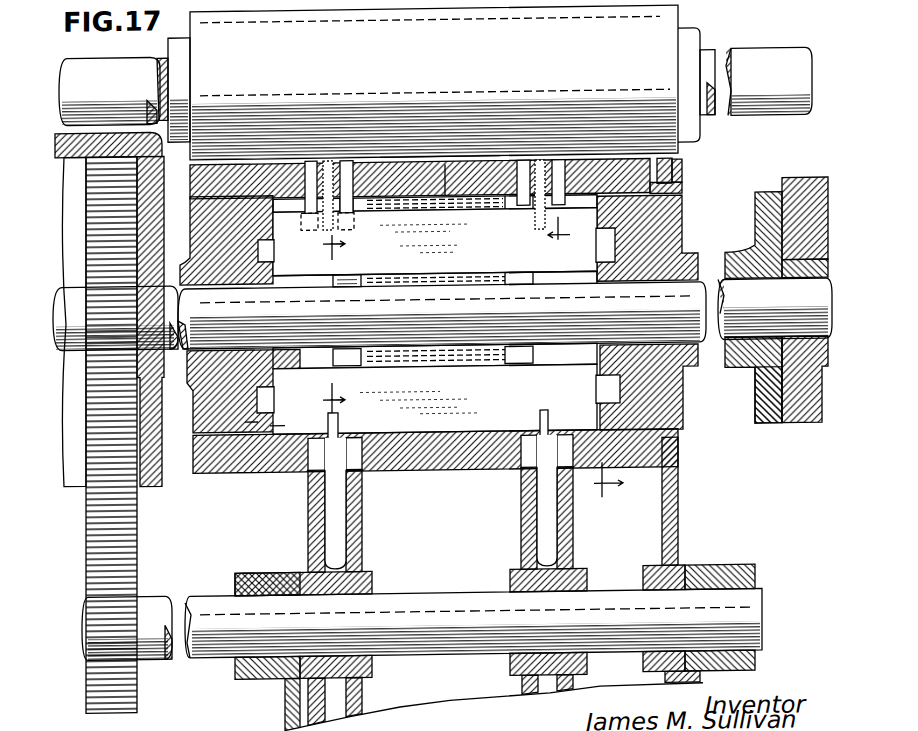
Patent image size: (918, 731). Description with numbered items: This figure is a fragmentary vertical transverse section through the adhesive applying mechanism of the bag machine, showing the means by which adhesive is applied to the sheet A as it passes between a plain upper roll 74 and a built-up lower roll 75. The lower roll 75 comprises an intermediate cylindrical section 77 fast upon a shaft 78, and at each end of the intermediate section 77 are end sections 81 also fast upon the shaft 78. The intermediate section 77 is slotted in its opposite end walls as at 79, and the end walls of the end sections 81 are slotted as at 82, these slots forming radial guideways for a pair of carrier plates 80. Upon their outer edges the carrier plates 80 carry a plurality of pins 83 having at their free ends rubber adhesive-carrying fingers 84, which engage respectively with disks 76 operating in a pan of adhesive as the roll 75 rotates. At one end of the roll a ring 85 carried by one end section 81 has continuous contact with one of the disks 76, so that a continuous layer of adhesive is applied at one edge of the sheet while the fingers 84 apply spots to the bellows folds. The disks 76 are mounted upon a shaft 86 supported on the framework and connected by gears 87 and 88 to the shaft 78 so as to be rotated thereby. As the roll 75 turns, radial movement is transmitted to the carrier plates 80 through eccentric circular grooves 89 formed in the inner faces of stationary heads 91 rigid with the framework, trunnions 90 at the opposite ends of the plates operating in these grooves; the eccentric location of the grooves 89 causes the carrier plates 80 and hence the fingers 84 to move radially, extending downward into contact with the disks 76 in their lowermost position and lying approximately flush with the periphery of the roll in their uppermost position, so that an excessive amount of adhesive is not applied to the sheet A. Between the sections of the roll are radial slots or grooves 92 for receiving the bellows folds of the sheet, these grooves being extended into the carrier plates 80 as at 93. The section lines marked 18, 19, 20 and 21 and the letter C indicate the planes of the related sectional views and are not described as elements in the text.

The plain upper roll 74 is at (441, 83).
The end sections 81 is at (245, 164).
The ring 85 is at (672, 179).
The built-up lower roll 75 is at (682, 191).
The rubber adhesive-carrying fingers 84 is at (350, 159).
The pins 83 is at (353, 186).
The sheet A is at (440, 160).
The carrier plates 80 is at (436, 241).
The intermediate cylindrical section 77 is at (450, 188).
The pin C is at (536, 215).
The section line 21 is at (559, 234).
The section line 20 is at (323, 324).
The slots 82 is at (293, 280).
The slots 79 is at (360, 284).
The shaft 78 is at (505, 313).
The shaft 18 is at (75, 312).
The gear 88 is at (98, 388).
The stationary heads 91 is at (210, 387).
The groove extensions 93 is at (338, 427).
The eccentric circular grooves 89 is at (250, 418).
The trunnions 90 is at (278, 423).
The radial slots or grooves 92 is at (362, 490).
The disks 76 is at (362, 534).
The section line 19 is at (611, 489).
The gear 87 is at (133, 526).
The shaft 86 is at (415, 603).